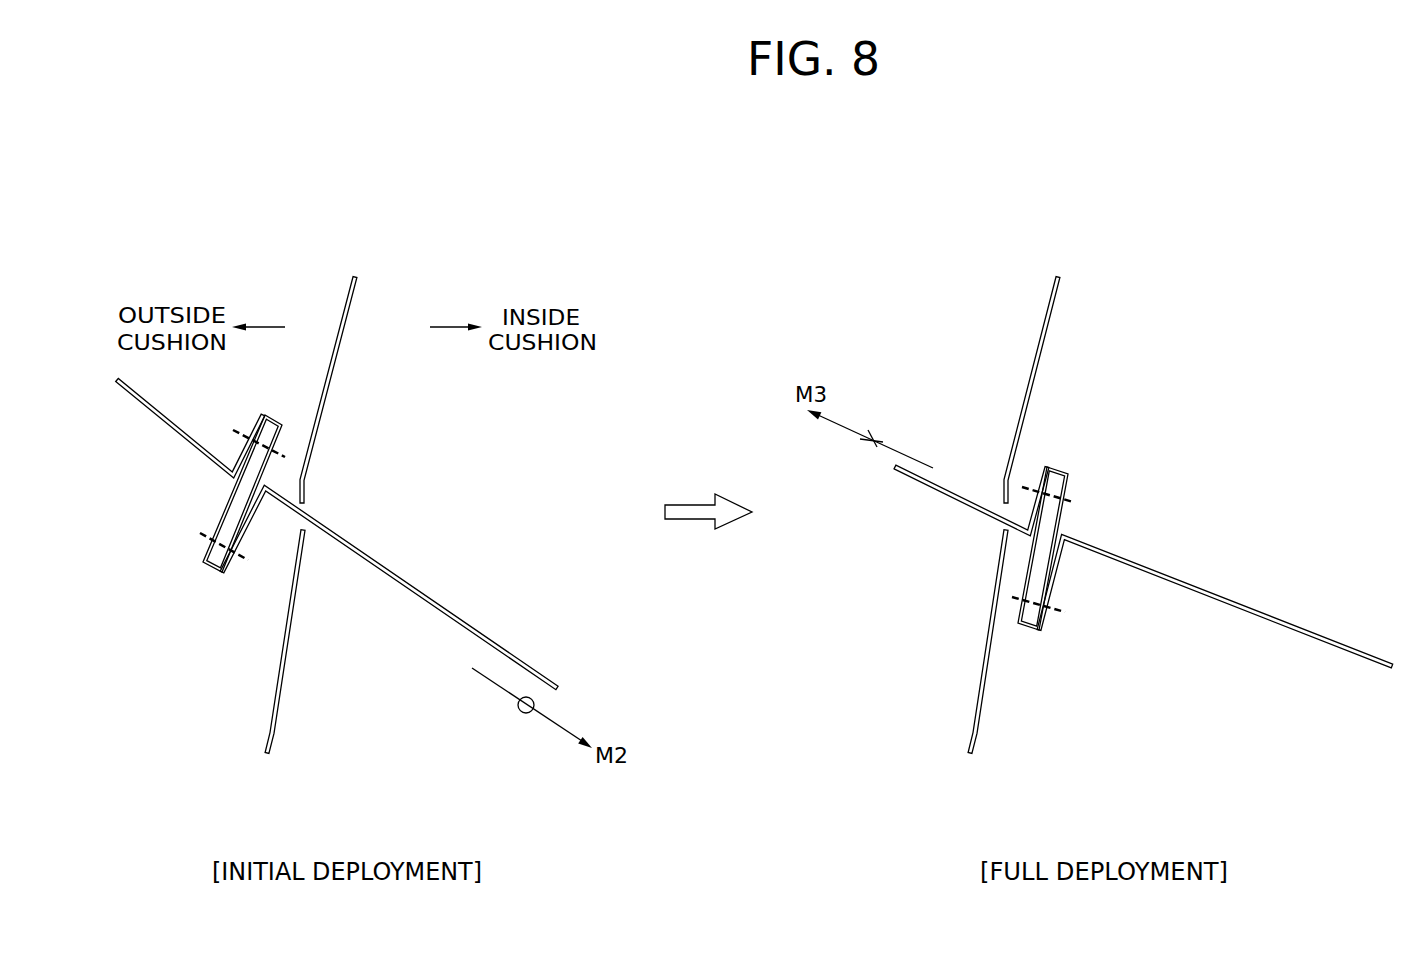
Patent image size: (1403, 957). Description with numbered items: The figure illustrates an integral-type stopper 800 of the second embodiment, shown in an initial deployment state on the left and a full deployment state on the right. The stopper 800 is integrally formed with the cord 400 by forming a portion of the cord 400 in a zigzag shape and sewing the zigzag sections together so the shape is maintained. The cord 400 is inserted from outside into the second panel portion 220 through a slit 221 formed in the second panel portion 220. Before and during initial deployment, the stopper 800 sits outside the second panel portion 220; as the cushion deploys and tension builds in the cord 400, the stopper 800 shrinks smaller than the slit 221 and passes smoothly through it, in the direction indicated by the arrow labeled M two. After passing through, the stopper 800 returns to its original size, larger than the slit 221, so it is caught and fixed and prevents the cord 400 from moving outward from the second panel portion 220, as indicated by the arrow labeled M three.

The second panel portion 220 is at (270, 715).
The slit 221 is at (302, 510).
The cord 400 is at (152, 413).
The integral-type stopper 800 is at (205, 567).